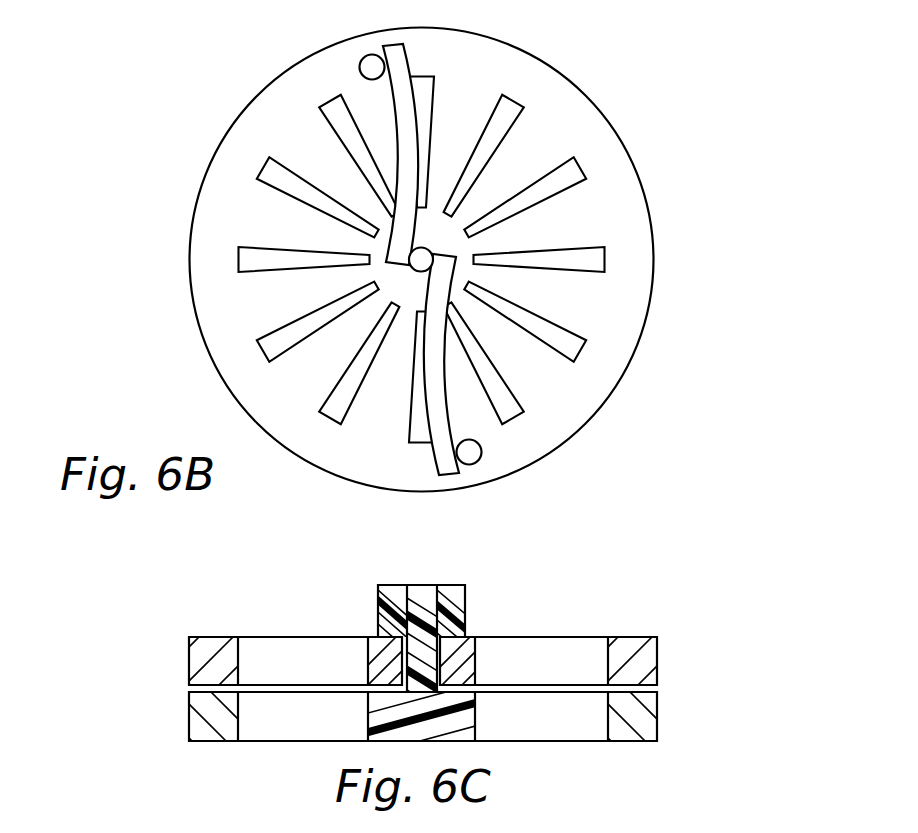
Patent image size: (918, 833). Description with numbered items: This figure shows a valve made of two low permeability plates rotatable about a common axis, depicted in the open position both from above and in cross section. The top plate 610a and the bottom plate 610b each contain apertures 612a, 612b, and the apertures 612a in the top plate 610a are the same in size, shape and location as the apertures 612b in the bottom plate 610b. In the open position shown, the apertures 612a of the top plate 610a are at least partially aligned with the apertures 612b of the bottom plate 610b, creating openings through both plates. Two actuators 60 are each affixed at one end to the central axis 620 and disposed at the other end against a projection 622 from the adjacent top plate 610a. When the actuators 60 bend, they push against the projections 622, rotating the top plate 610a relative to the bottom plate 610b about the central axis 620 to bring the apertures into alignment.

In FIG. 6B, the actuator 60 is at (408, 56).
In FIG. 6C, the actuator 60 is at (378, 610).
In FIG. 6B, the top plate 610a is at (200, 232).
In FIG. 6C, the top plate 610a is at (657, 660).
In FIG. 6C, the bottom plate 610b is at (657, 713).
In FIG. 6B, the apertures 612a is at (282, 187).
In FIG. 6C, the apertures 612a is at (560, 638).
In FIG. 6C, the apertures 612b is at (563, 723).
In FIG. 6B, the central axis 620 is at (409, 261).
In FIG. 6C, the central axis 620 is at (423, 585).
In FIG. 6B, the projection 622 is at (360, 72).